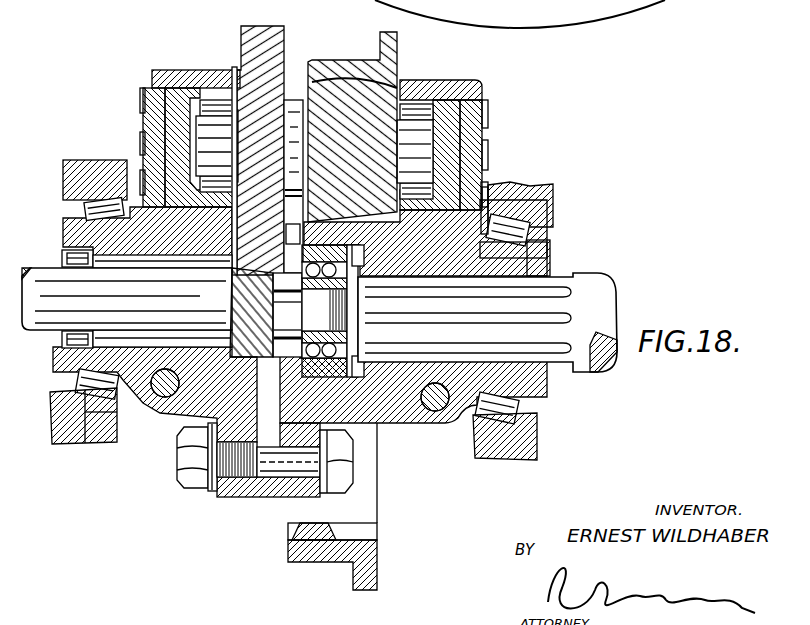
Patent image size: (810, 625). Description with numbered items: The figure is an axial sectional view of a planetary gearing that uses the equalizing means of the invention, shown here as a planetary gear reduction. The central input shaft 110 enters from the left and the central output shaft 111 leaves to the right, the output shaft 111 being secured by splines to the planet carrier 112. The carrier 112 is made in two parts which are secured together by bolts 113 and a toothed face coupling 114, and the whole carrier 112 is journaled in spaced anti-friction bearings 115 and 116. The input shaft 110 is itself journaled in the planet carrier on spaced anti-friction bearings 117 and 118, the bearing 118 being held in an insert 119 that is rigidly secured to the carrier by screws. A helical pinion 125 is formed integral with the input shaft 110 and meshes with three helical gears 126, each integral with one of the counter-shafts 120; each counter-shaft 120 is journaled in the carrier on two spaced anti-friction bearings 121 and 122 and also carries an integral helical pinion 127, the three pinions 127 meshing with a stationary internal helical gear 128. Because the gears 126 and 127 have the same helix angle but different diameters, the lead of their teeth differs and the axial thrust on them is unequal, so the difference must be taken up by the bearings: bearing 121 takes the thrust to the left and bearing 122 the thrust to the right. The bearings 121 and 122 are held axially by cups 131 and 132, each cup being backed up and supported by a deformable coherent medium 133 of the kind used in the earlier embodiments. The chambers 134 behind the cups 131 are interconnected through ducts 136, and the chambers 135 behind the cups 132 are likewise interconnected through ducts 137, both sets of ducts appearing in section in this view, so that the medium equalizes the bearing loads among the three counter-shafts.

The central input shaft 110 is at (47, 318).
The central output shaft 111 is at (580, 288).
The planet carrier 112 is at (403, 410).
The bolts 113 is at (235, 475).
The toothed face coupling 114 is at (277, 480).
The anti-friction bearing 115 is at (100, 412).
The anti-friction bearing 116 is at (482, 410).
The anti-friction bearing 117 is at (62, 262).
The anti-friction bearing 118 is at (300, 358).
The insert 119 is at (297, 222).
The counter-shaft 120 is at (292, 107).
The anti-friction bearing 121 is at (213, 100).
The anti-friction bearing 122 is at (418, 102).
The helical pinion 125 is at (230, 343).
The helical gear 126 is at (258, 35).
The helical pinion 127 is at (340, 105).
The stationary internal helical gear 128 is at (345, 522).
The cup 131 is at (197, 92).
The cup 132 is at (445, 108).
The deformable coherent medium 133 is at (167, 115).
The chamber 134 is at (167, 160).
The chamber 135 is at (470, 195).
The duct 136 is at (166, 388).
The duct 137 is at (436, 408).